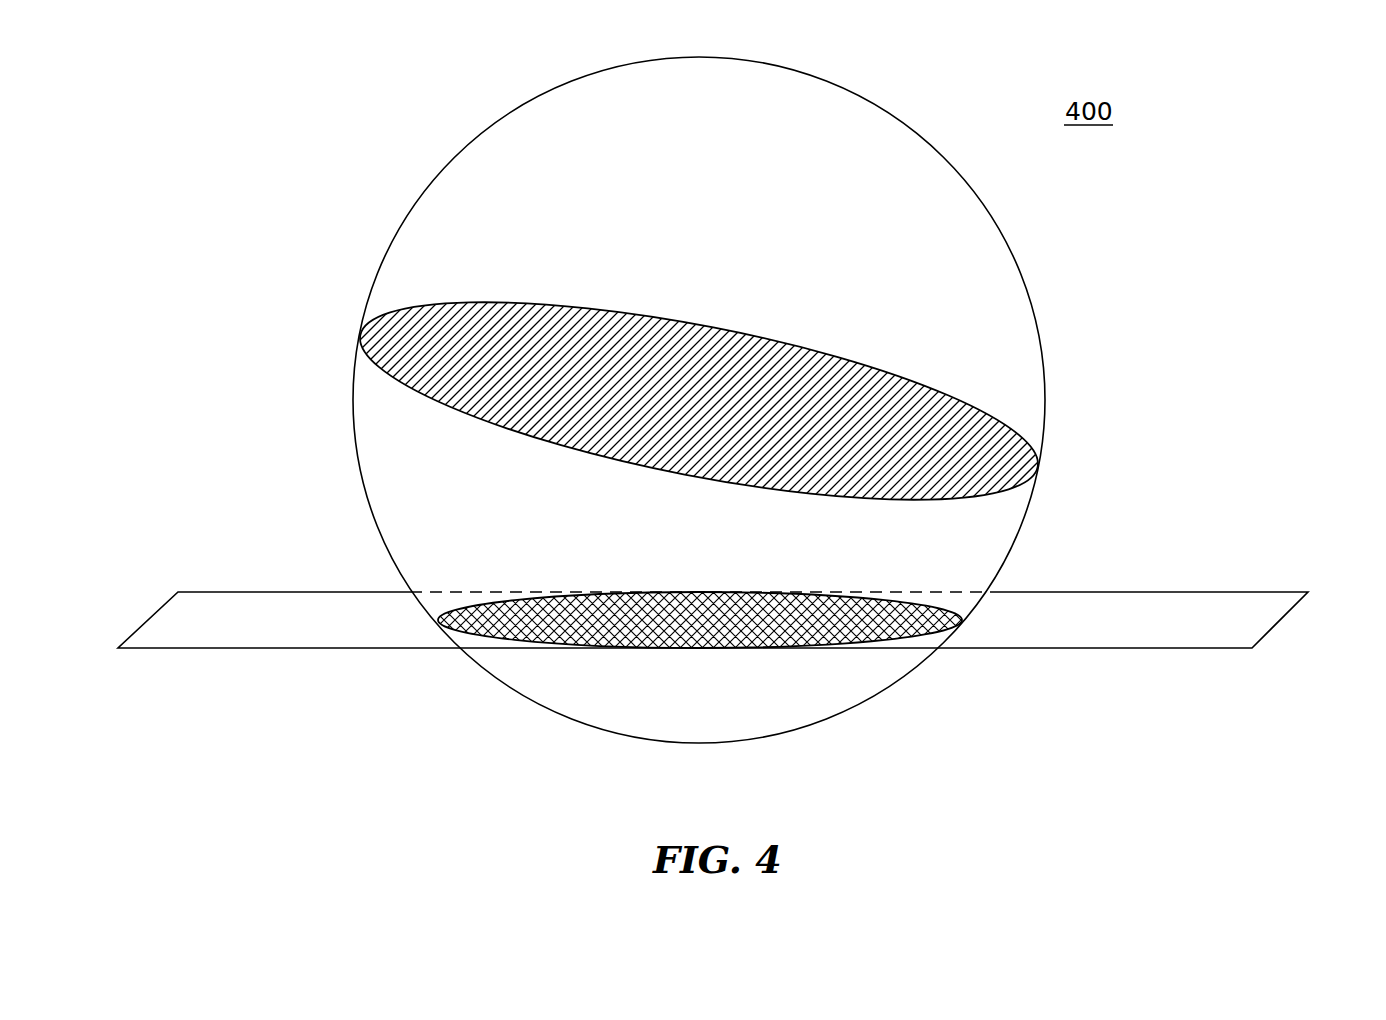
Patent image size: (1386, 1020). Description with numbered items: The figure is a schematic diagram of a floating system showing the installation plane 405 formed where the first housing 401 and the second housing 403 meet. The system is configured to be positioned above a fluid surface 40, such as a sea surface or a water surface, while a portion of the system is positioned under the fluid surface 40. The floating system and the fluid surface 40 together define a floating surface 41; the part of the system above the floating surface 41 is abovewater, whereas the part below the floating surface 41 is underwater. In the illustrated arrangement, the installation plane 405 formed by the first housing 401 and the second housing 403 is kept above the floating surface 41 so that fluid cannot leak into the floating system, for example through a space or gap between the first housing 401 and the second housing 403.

The first housing 401 is at (826, 176).
The second housing 403 is at (921, 567).
The installation plane 405 is at (996, 445).
The floating surface 41 is at (538, 604).
The fluid surface 40 is at (1238, 616).